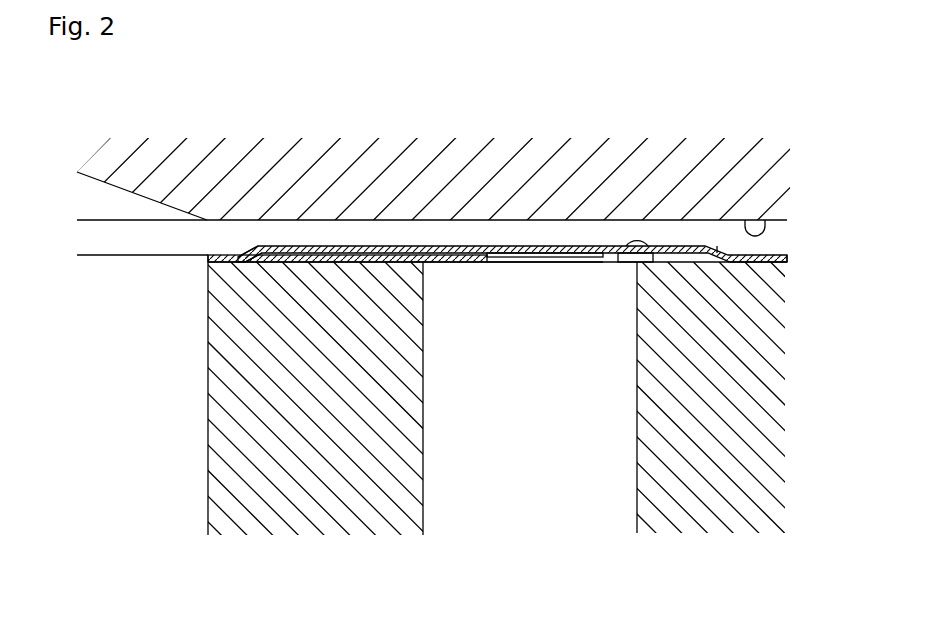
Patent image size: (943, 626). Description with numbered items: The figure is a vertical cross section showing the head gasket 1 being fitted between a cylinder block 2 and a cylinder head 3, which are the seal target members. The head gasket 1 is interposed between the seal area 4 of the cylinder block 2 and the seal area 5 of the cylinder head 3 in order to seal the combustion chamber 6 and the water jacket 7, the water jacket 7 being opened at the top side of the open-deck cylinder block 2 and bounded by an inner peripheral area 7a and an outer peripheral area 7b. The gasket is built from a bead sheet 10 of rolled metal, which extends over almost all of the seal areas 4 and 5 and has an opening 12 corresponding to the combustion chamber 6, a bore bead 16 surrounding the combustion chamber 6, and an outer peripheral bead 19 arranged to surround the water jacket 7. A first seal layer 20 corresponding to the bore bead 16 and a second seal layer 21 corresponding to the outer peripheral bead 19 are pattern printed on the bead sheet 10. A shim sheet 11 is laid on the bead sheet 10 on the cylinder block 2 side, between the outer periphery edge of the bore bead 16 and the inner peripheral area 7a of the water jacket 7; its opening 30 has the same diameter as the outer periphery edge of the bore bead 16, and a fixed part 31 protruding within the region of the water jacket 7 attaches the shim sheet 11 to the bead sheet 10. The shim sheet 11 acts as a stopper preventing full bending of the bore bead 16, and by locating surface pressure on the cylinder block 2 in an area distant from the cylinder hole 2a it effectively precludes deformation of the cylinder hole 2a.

The head gasket 1 is at (427, 223).
The cylinder block 2 is at (770, 352).
The cylinder hole 2a is at (208, 492).
The cylinder head 3 is at (640, 158).
The seal area 4 is at (620, 263).
The seal area 5 is at (766, 222).
The combustion chamber 6 is at (108, 426).
The water jacket 7 is at (541, 426).
The inner peripheral area of the water jacket 7a is at (423, 470).
The outer peripheral area of the water jacket 7b is at (637, 487).
The bead sheet 10 is at (519, 233).
The shim sheet 11 is at (498, 263).
The opening 12 is at (208, 261).
The bore bead 16 is at (243, 258).
The outer peripheral bead 19 is at (717, 250).
The first seal layer 20 is at (333, 246).
The second seal layer 21 is at (783, 263).
The opening 30 is at (252, 256).
The fixed part 31 is at (556, 263).